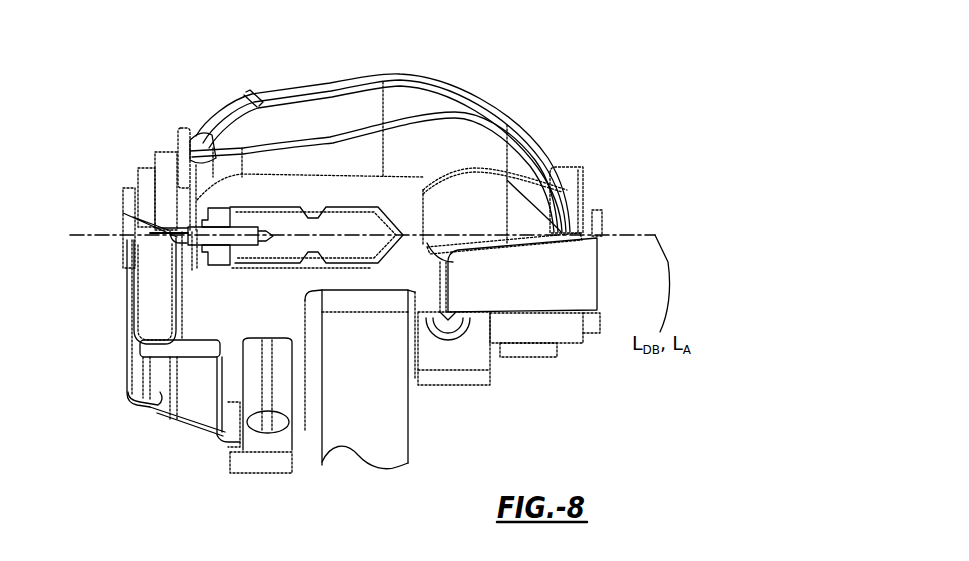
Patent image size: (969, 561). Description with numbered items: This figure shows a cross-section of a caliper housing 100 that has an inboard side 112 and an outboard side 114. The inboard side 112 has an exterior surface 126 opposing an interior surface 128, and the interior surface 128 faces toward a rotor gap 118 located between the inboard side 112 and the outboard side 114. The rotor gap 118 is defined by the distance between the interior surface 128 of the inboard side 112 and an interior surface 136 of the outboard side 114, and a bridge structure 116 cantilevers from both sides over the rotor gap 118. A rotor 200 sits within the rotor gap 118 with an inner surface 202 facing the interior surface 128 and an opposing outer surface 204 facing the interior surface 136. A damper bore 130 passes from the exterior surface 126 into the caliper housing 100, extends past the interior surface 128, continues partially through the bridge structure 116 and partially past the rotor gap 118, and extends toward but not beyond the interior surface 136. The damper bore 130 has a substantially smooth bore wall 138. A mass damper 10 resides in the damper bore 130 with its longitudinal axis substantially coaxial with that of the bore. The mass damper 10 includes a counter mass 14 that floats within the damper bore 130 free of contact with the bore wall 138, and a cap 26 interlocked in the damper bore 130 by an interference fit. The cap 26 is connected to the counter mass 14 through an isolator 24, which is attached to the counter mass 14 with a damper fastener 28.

The caliper housing 100 is at (86, 110).
The damper bore 130 is at (190, 212).
The cap 26 is at (213, 212).
The mass damper 10 is at (275, 212).
The bridge structure 116 is at (440, 100).
The damper fastener 28 is at (186, 237).
The exterior surface 126 is at (146, 296).
The isolator 24 is at (206, 256).
The bore wall 138 is at (262, 265).
The counter mass 14 is at (297, 250).
The inboard side 112 is at (132, 330).
The rotor gap 118 is at (414, 306).
The interior surface 136 is at (418, 362).
The outboard side 114 is at (575, 327).
The rotor 200 is at (384, 443).
The outer surface 204 is at (408, 448).
The inner surface 202 is at (321, 447).
The interior surface 128 is at (300, 445).